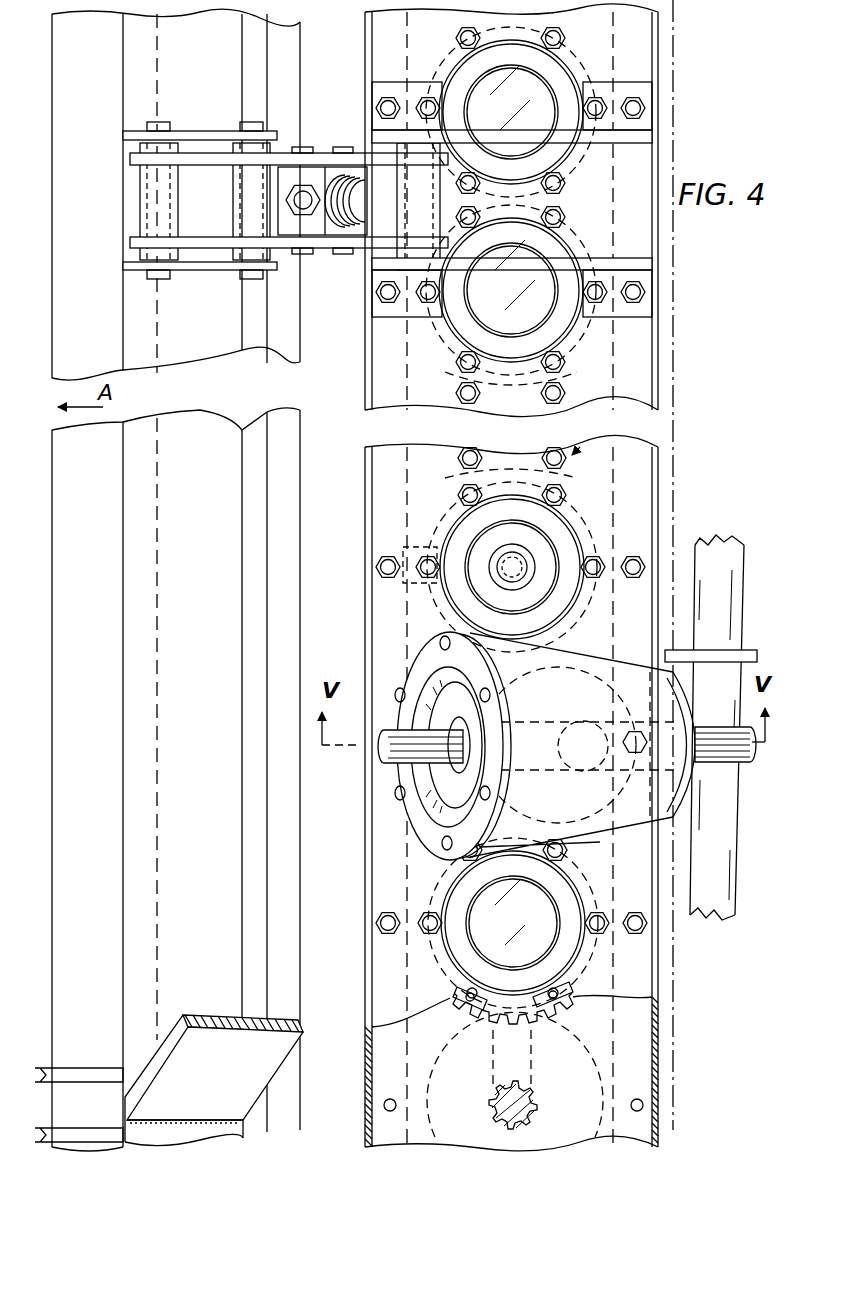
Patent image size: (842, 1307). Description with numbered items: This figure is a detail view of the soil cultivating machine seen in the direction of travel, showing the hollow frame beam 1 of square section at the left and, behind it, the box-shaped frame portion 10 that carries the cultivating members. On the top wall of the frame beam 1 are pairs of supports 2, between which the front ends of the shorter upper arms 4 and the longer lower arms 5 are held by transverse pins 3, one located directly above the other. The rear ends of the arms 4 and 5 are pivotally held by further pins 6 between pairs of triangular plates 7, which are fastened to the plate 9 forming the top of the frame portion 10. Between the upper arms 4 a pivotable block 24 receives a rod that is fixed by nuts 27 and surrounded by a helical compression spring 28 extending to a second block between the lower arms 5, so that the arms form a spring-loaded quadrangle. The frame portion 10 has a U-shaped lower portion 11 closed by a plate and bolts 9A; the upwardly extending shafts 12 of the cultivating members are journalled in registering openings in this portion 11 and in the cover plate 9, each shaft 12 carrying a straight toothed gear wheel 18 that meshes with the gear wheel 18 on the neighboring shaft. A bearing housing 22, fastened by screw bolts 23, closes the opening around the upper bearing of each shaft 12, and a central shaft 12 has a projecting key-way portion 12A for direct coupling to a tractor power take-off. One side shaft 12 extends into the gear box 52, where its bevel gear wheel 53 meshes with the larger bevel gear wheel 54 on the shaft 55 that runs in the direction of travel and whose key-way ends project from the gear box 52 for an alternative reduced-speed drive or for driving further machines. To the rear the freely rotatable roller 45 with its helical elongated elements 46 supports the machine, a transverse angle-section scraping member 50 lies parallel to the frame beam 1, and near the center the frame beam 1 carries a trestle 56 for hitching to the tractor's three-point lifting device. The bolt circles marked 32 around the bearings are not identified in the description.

The hollow frame beam 1 is at (140, 388).
The supports 2 is at (123, 135).
The pins 3 is at (158, 121).
The upper arms 4 is at (355, 152).
The lower arms 5 is at (190, 240).
The pins 6 is at (422, 112).
The plates 7 is at (622, 143).
The plate 9 is at (652, 440).
The bolts 9A is at (647, 292).
The box-shaped frame portion 10 is at (663, 1035).
The lower portion 11 is at (370, 1062).
The shafts 12 is at (538, 1106).
The key-way portion 12A is at (522, 562).
The gear wheel 18 is at (482, 1017).
The bearing housing 22 is at (555, 168).
The screw bolts 23 is at (556, 393).
The block 24 is at (320, 170).
The nuts 27 is at (300, 217).
The helical compression spring 28 is at (338, 228).
The bearing 32 is at (612, 60).
The roller 45 is at (737, 897).
The elongated elements 46 is at (716, 920).
The scraping member 50 is at (285, 410).
The gear box 52 is at (580, 840).
The bevel gear wheel 53 is at (560, 812).
The larger bevel gear wheel 54 is at (640, 826).
The shaft 55 is at (380, 748).
The trestle 56 is at (226, 1016).